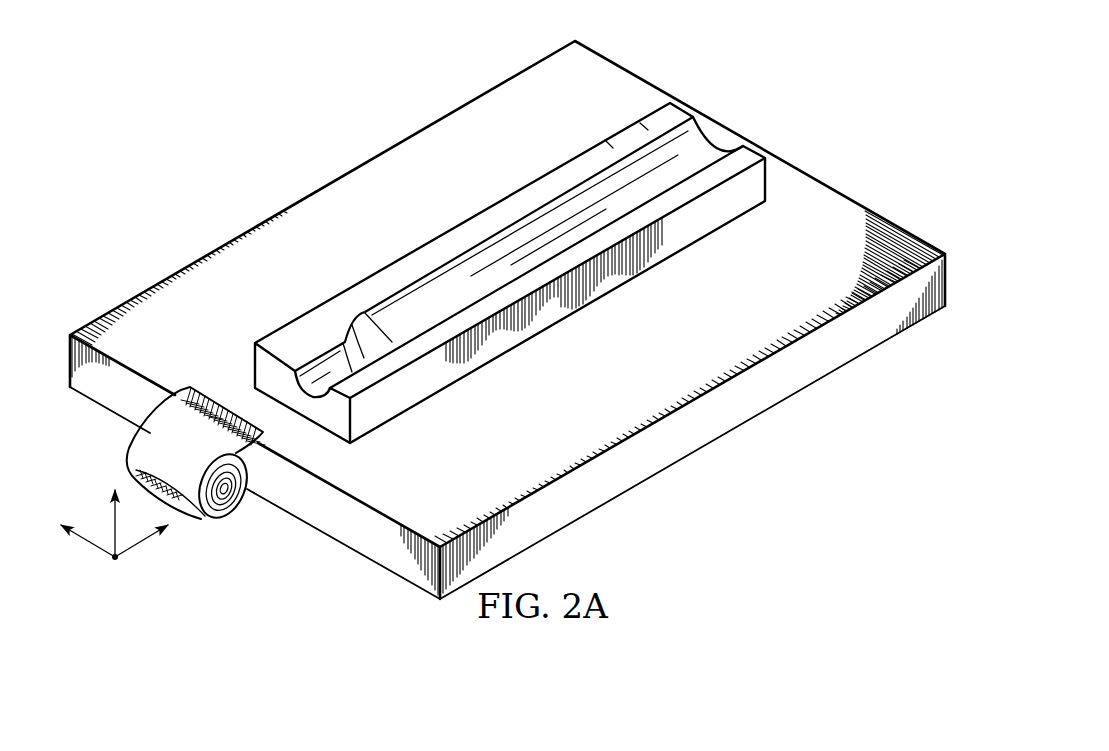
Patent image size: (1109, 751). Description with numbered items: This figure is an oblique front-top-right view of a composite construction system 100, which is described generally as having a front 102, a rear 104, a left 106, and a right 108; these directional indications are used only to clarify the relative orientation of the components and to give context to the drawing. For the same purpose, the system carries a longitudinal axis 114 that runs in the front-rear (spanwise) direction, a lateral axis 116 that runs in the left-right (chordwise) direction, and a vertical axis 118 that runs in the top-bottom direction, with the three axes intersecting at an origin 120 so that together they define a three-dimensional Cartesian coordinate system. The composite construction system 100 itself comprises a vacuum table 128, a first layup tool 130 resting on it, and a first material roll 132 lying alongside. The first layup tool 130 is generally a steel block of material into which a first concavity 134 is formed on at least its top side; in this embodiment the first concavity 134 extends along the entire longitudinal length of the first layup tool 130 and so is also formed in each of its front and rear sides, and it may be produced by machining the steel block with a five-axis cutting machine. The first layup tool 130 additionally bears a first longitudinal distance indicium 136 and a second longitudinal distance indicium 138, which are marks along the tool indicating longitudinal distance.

The composite construction system 100 is at (337, 82).
The front 102 is at (298, 570).
The rear 104 is at (815, 152).
The left 106 is at (285, 182).
The right 108 is at (658, 510).
The longitudinal axis 114 is at (143, 547).
The lateral axis 116 is at (93, 547).
The vertical axis 118 is at (107, 522).
The origin 120 is at (120, 565).
The vacuum table 128 is at (858, 347).
The first layup tool 130 is at (687, 237).
The first material roll 132 is at (215, 520).
The first concavity 134 is at (422, 285).
The first longitudinal distance indicium 136 is at (630, 117).
The second longitudinal distance indicium 138 is at (600, 135).